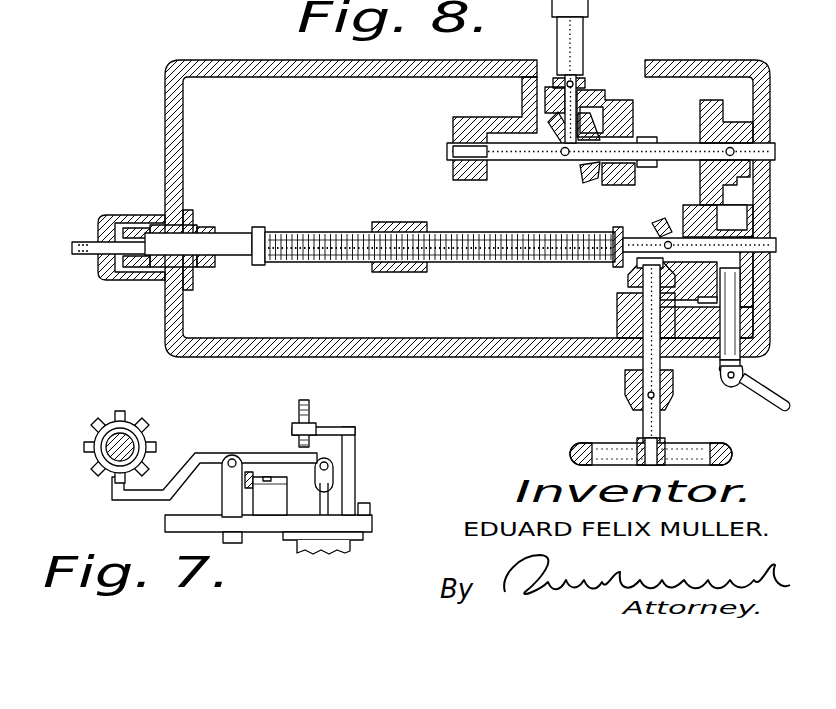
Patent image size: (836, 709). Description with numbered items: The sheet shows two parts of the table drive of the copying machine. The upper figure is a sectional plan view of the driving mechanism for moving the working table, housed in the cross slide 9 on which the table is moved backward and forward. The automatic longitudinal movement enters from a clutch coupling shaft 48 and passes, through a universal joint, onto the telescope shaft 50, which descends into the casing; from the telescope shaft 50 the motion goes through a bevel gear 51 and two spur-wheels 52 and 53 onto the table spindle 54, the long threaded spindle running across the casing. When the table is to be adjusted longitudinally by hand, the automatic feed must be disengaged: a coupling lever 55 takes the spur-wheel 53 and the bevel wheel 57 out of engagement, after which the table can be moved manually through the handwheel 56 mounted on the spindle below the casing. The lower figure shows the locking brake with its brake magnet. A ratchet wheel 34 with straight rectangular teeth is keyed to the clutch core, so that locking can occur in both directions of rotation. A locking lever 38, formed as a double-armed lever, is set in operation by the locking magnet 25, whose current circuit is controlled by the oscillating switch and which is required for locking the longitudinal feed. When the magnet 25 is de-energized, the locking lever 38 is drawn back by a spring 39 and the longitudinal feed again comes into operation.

In FIG. 8, the cross slide 9 is at (240, 358).
In FIG. 7, the locking magnet 25 is at (285, 534).
In FIG. 7, the ratchet wheel 34 is at (131, 421).
In FIG. 7, the locking lever 38 is at (133, 492).
In FIG. 7, the spring 39 is at (298, 478).
In FIG. 7, the clutch coupling shaft 48 is at (99, 450).
In FIG. 8, the telescope shaft 50 is at (590, 10).
In FIG. 8, the bevel gear 51 is at (597, 107).
In FIG. 8, the spur-wheel 52 is at (701, 109).
In FIG. 8, the spur-wheel 53 is at (697, 215).
In FIG. 8, the table spindle 54 is at (476, 263).
In FIG. 8, the coupling lever 55 is at (768, 391).
In FIG. 8, the handwheel 56 is at (578, 446).
In FIG. 8, the bevel wheel 57 is at (660, 225).